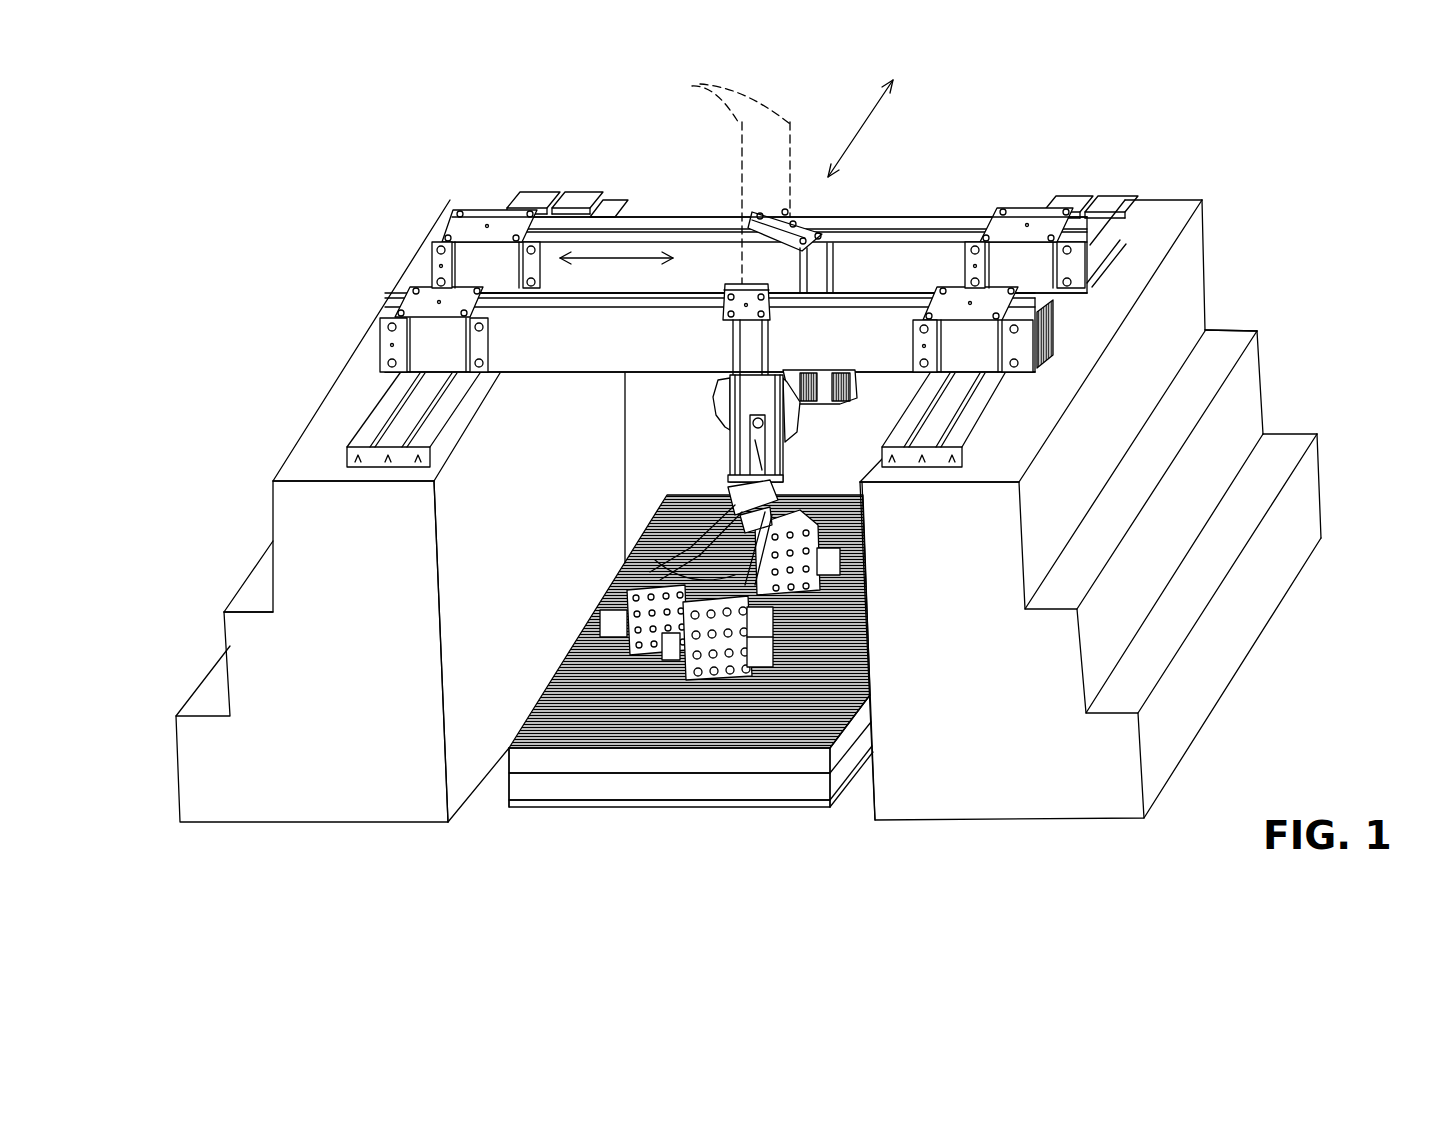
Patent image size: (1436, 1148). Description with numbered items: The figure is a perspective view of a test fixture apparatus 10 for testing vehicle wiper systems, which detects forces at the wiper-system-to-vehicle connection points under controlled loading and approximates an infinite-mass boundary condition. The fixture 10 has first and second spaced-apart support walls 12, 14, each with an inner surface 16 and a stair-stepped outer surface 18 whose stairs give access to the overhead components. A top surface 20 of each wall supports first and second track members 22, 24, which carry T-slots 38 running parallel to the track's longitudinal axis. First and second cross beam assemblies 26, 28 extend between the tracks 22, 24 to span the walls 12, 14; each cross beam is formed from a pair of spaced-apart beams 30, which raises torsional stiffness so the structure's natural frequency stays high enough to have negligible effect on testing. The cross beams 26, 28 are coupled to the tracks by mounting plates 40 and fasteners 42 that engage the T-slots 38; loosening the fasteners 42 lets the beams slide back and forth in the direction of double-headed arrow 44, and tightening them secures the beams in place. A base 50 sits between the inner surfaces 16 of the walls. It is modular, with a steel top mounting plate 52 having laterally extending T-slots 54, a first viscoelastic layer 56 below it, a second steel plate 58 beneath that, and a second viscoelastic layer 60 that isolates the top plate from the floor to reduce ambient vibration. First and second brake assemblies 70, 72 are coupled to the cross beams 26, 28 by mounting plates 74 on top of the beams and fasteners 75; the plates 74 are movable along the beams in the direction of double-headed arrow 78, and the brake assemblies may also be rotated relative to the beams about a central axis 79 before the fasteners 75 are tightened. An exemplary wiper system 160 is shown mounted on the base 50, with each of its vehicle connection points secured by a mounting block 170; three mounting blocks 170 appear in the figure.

The test fixture apparatus 10 is at (1280, 225).
The first support wall 12 is at (318, 795).
The second support wall 14 is at (968, 785).
The inner surface 16 is at (490, 770).
The stair-stepped outer surface 18 is at (238, 571).
The top surface 20 is at (305, 437).
The first track member 22 is at (555, 185).
The second track member 24 is at (1112, 186).
The first cross beam assembly 26 is at (558, 355).
The second cross beam assembly 28 is at (677, 222).
The beam 30 is at (527, 350).
The T-slot 38 is at (385, 468).
The mounting plate 40 is at (487, 217).
The fastener 42 is at (432, 258).
The double-headed arrow 44 is at (868, 110).
The base 50 is at (668, 708).
The top mounting plate 52 is at (797, 765).
The T-slot 54 is at (555, 645).
The first viscoelastic layer 56 is at (728, 777).
The second steel plate 58 is at (557, 790).
The second viscoelastic layer 60 is at (677, 805).
The first brake assembly 70 is at (742, 454).
The second brake assembly 72 is at (838, 425).
The mounting plate 74 is at (815, 220).
The fastener 75 is at (832, 270).
The double-headed arrow 78 is at (615, 257).
The central axis 79 is at (724, 183).
The wiper system 160 is at (695, 480).
The mounting block 170 is at (600, 593).